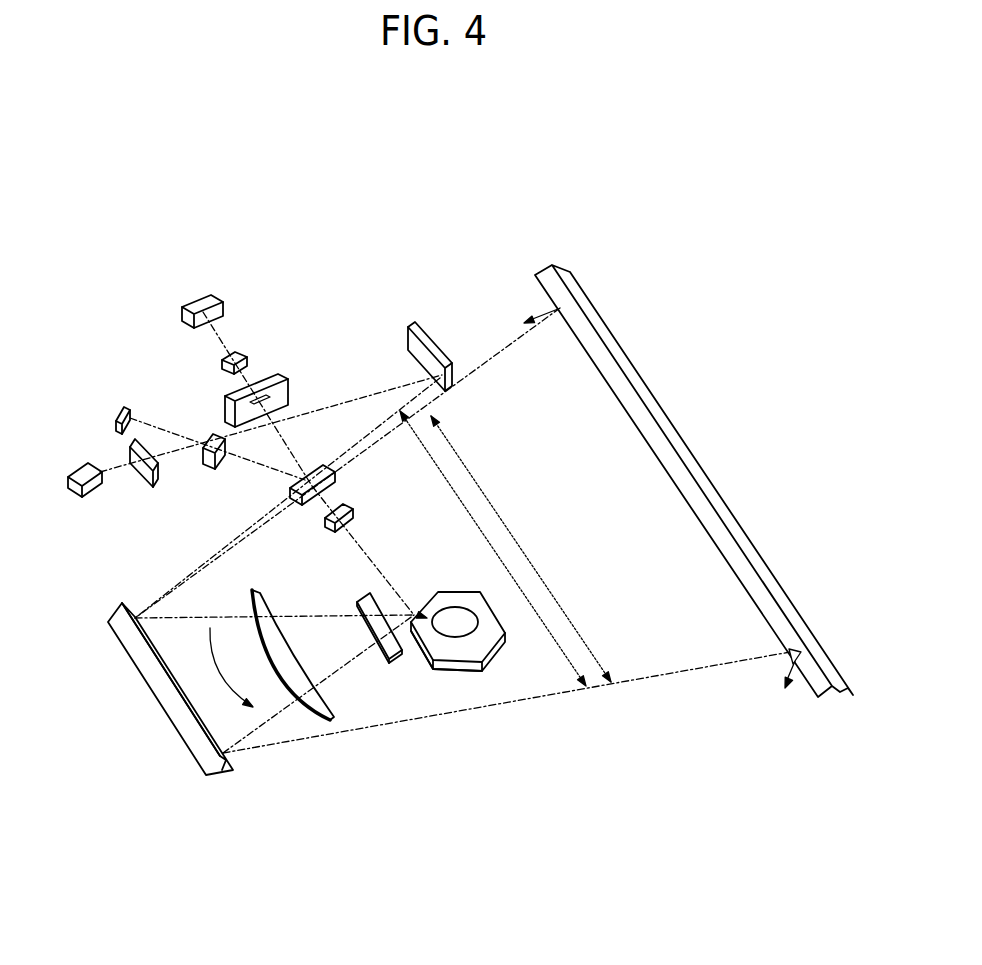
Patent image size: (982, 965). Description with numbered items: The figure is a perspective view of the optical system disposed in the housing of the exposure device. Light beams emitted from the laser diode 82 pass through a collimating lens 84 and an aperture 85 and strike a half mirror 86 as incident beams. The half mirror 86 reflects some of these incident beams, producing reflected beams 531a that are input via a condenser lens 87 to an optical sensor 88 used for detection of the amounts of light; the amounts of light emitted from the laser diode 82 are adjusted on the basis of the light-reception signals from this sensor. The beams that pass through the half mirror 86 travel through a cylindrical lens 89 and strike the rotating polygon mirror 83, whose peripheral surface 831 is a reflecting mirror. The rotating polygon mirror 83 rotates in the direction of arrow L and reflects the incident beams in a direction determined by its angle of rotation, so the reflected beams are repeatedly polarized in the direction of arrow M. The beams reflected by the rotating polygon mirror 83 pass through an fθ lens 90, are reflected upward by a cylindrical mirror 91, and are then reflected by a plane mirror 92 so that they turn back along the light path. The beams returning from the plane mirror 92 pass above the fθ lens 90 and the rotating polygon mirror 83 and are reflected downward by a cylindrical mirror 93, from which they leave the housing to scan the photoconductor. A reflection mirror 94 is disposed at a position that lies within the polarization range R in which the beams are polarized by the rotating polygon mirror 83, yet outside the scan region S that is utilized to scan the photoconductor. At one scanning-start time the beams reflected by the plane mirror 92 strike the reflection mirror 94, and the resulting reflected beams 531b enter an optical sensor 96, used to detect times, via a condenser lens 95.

The laser diode 82 is at (212, 295).
The reflected beams 531a is at (218, 328).
The reflected beams 531b is at (345, 402).
The collimating lens 84 is at (238, 352).
The aperture 85 is at (274, 373).
The half mirror 86 is at (317, 464).
The cylindrical lens 89 is at (347, 500).
The optical sensor 96 is at (83, 473).
The condenser lens 95 is at (155, 476).
The condenser lens 87 is at (211, 433).
The optical sensor 88 is at (121, 405).
The reflection mirror 94 is at (420, 325).
The cylindrical mirror 93 is at (550, 275).
The scan region S is at (521, 549).
The polarization range R is at (493, 548).
The fθ lens 90 is at (358, 598).
The arrow M is at (245, 673).
The arrow L is at (423, 610).
The rotating polygon mirror 83 is at (462, 597).
The peripheral surface 831 is at (467, 671).
The cylindrical mirror 91 is at (230, 760).
The plane mirror 92 is at (180, 710).